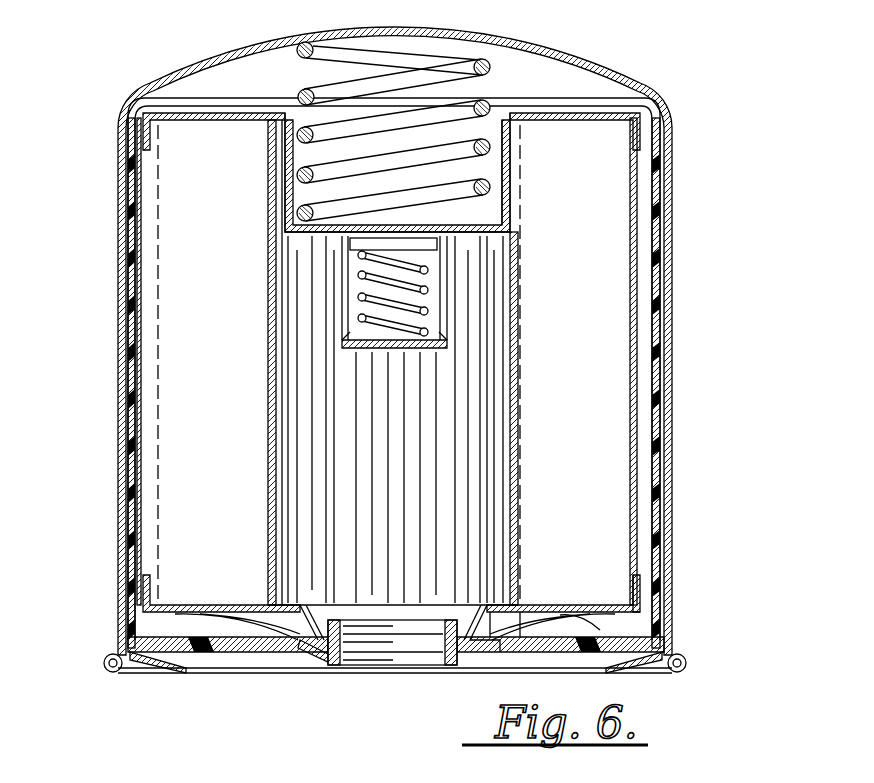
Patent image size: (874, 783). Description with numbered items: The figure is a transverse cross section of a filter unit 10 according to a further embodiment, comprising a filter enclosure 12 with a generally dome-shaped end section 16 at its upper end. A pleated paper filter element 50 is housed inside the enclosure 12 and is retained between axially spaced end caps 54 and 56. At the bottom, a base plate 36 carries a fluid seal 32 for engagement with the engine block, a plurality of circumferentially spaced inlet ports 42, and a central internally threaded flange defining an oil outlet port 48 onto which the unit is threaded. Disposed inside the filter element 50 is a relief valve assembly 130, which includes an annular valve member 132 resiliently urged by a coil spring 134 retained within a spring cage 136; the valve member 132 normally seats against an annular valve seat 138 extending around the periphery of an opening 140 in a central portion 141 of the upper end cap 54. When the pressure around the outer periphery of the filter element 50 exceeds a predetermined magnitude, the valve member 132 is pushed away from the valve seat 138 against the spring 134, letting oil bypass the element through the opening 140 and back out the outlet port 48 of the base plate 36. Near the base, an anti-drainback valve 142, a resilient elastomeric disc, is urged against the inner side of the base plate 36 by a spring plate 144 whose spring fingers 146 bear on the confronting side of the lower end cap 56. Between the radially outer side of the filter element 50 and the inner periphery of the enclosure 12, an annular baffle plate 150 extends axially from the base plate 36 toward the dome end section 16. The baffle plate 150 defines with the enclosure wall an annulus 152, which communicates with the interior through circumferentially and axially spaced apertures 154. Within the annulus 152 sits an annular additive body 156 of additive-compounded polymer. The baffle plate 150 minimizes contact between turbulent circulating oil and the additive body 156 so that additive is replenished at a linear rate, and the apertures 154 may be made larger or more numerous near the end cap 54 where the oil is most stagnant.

The filter unit 10 is at (692, 216).
The filter enclosure 12 is at (676, 355).
The dome end section 16 is at (548, 52).
The fluid seal 32 is at (194, 678).
The base plate 36 is at (309, 675).
The inlet ports 42 is at (249, 656).
The oil outlet port 48 is at (393, 650).
The pleated paper filter element 50 is at (285, 438).
The end cap 54 is at (602, 108).
The end cap 56 is at (218, 603).
The relief valve assembly 130 is at (439, 336).
The valve member 132 is at (437, 246).
The coil spring 134 is at (428, 292).
The spring cage 136 is at (350, 338).
The valve seat 138 is at (358, 230).
The opening 140 is at (437, 220).
The central portion 141 is at (495, 213).
The anti-drainback valve 142 is at (543, 647).
The spring plate 144 is at (580, 612).
The spring fingers 146 is at (547, 612).
The baffle plate 150 is at (642, 618).
The annulus 152 is at (660, 418).
The apertures 154 is at (140, 408).
The additive body 156 is at (120, 252).